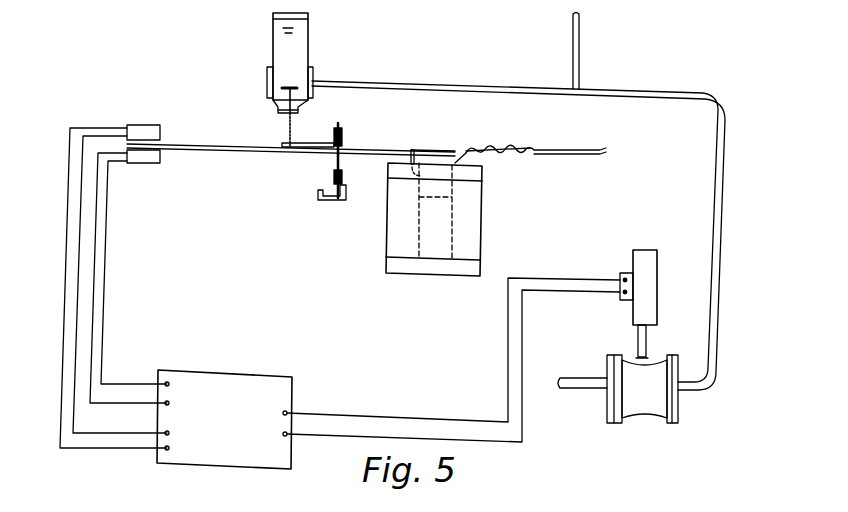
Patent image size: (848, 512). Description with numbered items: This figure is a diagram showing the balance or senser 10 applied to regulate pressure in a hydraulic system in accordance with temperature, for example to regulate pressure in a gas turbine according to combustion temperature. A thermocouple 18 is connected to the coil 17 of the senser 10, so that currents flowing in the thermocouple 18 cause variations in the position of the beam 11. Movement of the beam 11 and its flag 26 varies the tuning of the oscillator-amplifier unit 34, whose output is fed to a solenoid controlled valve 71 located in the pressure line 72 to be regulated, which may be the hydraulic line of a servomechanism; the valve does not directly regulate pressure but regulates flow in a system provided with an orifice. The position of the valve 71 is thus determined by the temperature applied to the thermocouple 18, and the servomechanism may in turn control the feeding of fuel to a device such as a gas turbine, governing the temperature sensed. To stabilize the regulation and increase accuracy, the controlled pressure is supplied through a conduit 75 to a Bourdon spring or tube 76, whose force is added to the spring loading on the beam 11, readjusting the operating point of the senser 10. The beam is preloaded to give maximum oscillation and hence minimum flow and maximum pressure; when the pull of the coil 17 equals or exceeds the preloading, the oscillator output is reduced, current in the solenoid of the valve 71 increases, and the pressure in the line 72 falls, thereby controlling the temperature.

The senser 10 is at (397, 141).
The beam 11 is at (230, 156).
The coil 17 is at (430, 152).
The thermocouple 18 is at (604, 160).
The flag 26 is at (162, 143).
The oscillator-amplifier unit 34 is at (227, 373).
The solenoid controlled valve 71 is at (633, 262).
The pressure line 72 is at (580, 45).
The conduit 75 is at (416, 92).
The Bourdon spring or tube 76 is at (308, 41).